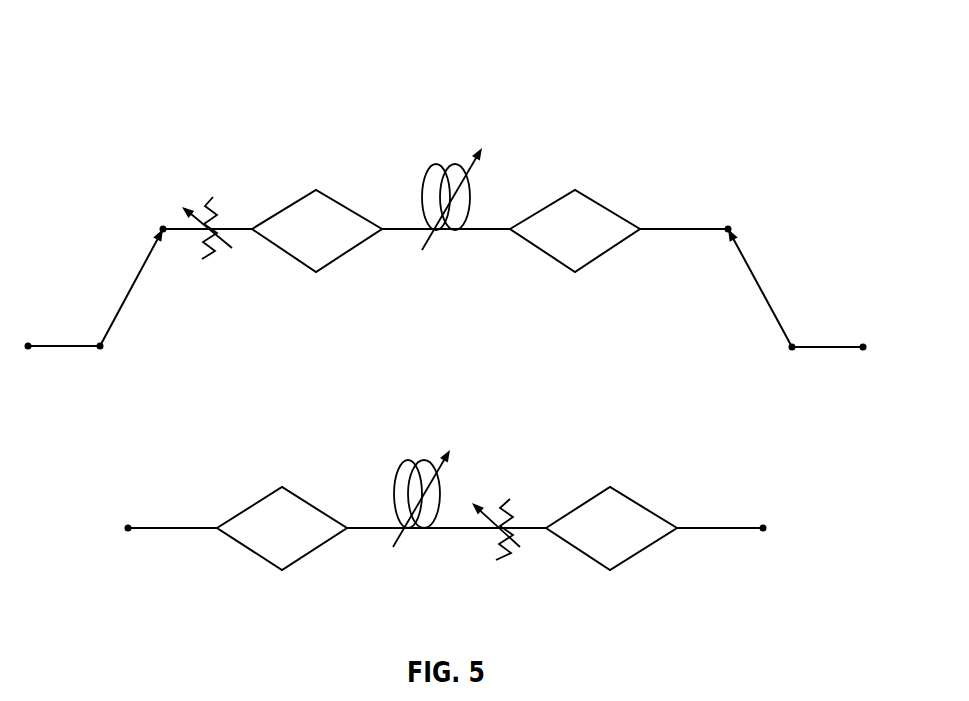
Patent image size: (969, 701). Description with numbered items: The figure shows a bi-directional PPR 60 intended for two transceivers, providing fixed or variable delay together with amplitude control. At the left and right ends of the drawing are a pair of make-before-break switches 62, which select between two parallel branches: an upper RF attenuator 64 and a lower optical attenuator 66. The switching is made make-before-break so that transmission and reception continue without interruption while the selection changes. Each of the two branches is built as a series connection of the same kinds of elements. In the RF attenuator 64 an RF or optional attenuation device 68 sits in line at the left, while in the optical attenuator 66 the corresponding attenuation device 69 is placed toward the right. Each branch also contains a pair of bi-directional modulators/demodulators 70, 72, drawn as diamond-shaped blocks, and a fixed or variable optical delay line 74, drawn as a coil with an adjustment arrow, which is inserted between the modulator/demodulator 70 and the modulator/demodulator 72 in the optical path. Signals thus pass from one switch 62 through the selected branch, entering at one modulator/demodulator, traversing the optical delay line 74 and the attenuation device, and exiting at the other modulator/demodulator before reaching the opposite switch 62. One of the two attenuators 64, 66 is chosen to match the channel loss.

The bi-directional PPR 60 is at (734, 75).
The make-before-break switches 62 is at (128, 292).
The RF attenuator 64 is at (585, 298).
The optical attenuator 66 is at (586, 428).
The RF or optional attenuation device 68 is at (213, 200).
The RF or optional attenuation device 69 is at (502, 500).
The bi-directional modulator/demodulator 70 is at (316, 190).
The bi-directional modulator/demodulator 72 is at (575, 190).
The fixed or variable optical delay line 74 is at (422, 180).